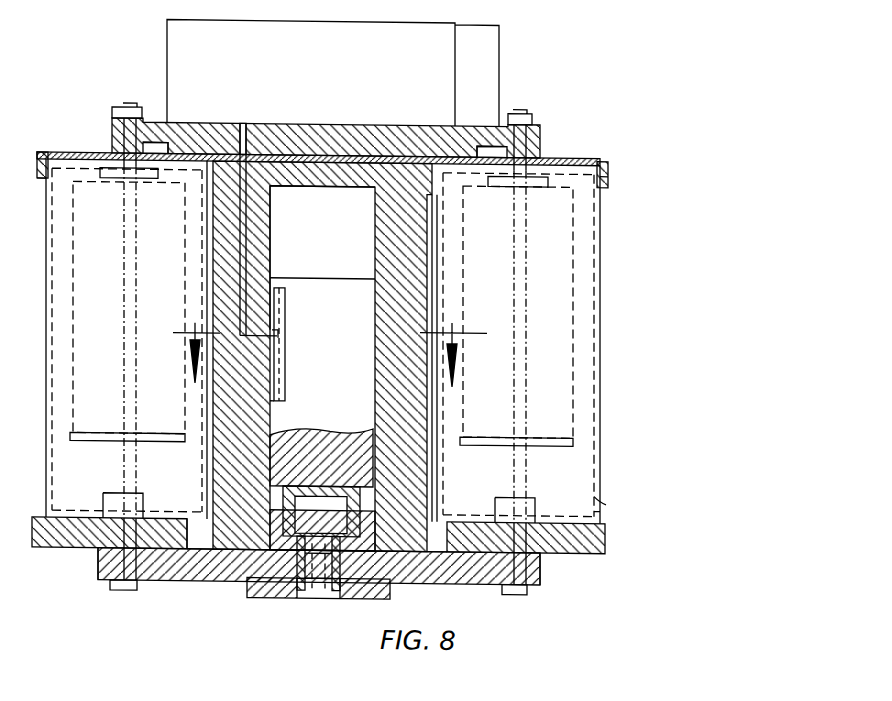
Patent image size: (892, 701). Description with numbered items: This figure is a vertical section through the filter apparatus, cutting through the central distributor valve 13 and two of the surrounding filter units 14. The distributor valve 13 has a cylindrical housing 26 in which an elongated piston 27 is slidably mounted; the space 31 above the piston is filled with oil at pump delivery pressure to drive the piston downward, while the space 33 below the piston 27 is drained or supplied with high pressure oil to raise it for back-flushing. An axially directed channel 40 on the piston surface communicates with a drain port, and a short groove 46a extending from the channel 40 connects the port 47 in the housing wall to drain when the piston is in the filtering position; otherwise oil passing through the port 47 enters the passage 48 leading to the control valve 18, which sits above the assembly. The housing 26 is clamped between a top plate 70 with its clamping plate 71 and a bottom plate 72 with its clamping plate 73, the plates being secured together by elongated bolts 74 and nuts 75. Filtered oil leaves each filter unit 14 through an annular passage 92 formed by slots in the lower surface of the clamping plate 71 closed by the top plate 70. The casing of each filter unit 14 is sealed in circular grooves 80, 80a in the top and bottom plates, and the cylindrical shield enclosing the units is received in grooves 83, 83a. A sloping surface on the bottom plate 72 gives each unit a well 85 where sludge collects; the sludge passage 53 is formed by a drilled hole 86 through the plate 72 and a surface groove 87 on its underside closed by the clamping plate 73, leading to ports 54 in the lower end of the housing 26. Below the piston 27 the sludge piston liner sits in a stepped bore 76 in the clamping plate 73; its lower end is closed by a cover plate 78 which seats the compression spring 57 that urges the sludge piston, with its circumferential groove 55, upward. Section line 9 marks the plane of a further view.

The control valve 18 is at (182, 14).
The nuts 75 is at (114, 110).
The annular passage 92 is at (156, 142).
The top plate 70 is at (545, 154).
The clamping plate 71 is at (538, 158).
The circular groove 80 is at (586, 160).
The groove 83 is at (610, 182).
The space above the piston 31 is at (336, 220).
The passage 48 is at (243, 257).
The cylindrical housing 26 is at (422, 252).
The filter unit 14 is at (600, 303).
The port 47 is at (285, 300).
The short groove 46a is at (252, 335).
The axially directed channel 40 is at (282, 362).
The elongated piston 27 is at (336, 394).
The space below the piston 33 is at (318, 482).
The distributor valve 13 is at (434, 440).
The section line 9 is at (321, 355).
The well 85 is at (193, 510).
The groove 83a is at (606, 497).
The circular groove 80a is at (600, 510).
The elongated bolts 74 is at (120, 590).
The drilled hole 86 is at (178, 545).
The surface groove 87 is at (207, 548).
The stepped bore 76 is at (265, 585).
The cover plate 78 is at (300, 572).
The compression spring 57 is at (318, 586).
The circumferential groove 55 is at (330, 584).
The ports 54 is at (345, 560).
The sludge passage 53 is at (432, 570).
The bottom plate 72 is at (556, 548).
The clamping plate 73 is at (540, 575).